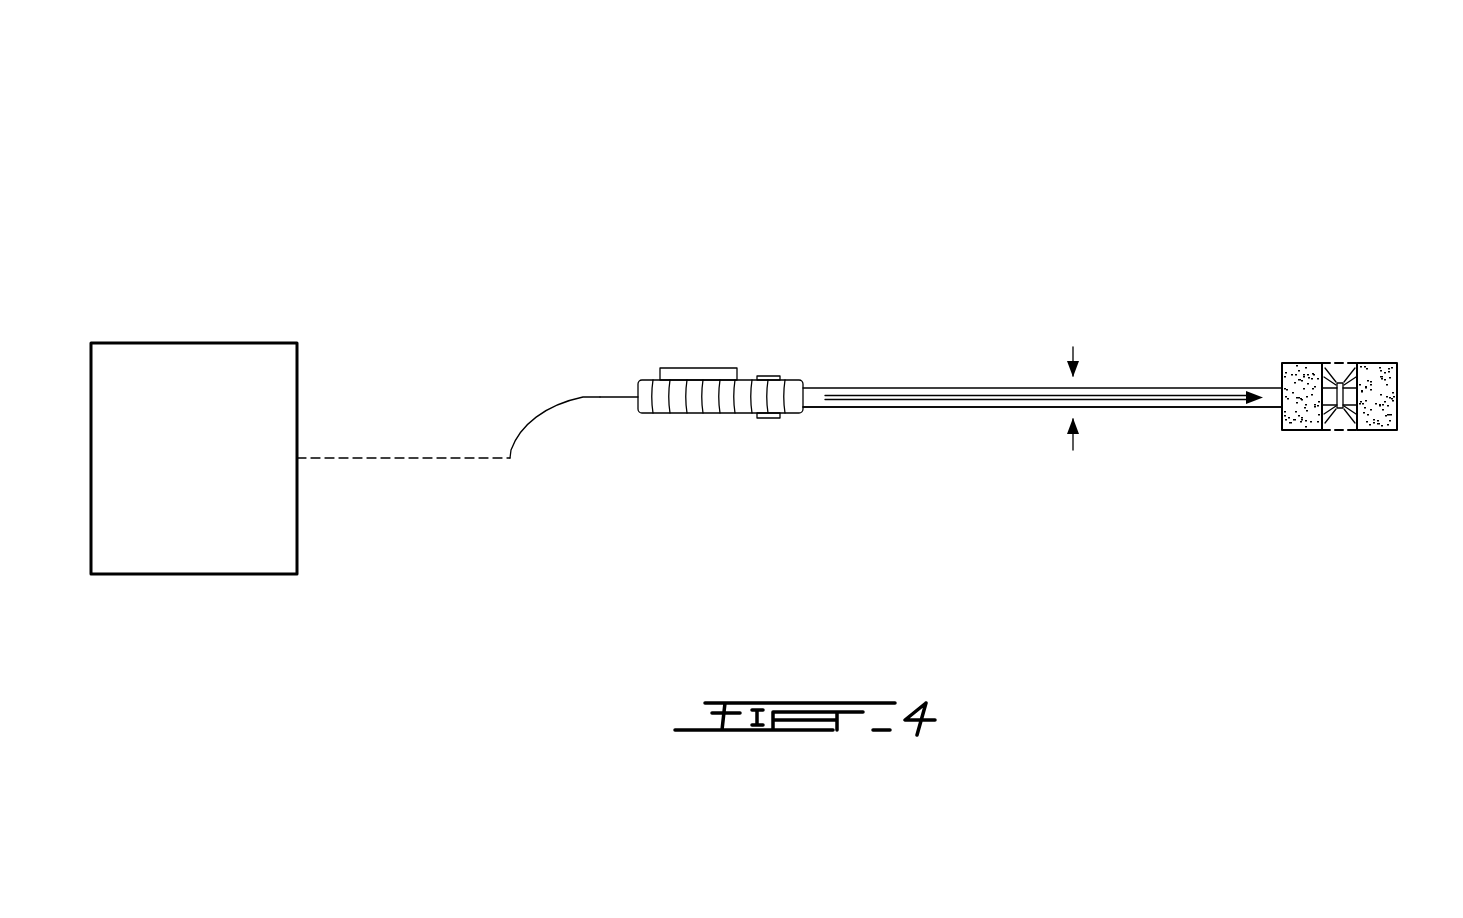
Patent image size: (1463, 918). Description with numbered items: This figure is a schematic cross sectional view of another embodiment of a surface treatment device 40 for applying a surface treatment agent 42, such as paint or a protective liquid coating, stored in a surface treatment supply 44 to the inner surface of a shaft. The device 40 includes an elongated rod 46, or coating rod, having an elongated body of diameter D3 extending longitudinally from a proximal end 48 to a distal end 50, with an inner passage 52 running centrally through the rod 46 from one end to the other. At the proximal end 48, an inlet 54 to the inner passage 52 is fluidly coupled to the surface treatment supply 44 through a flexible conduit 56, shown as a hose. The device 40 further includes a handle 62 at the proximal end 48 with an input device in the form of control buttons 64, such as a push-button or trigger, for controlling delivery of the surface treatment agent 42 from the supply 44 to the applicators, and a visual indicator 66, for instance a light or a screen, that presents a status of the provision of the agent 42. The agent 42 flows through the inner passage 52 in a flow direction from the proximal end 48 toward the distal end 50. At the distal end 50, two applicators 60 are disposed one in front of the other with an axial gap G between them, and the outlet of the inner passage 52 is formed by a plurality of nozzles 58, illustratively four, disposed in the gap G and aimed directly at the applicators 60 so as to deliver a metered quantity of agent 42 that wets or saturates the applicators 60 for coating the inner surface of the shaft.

The surface treatment device 40 is at (1145, 176).
The surface treatment agent 42 is at (857, 400).
The surface treatment supply 44 is at (193, 343).
The elongated rod 46 is at (975, 407).
The proximal end 48 is at (551, 364).
The distal end 50 is at (1391, 325).
The inner passage 52 is at (917, 388).
The inlet 54 is at (637, 396).
The flexible conduit 56 is at (440, 460).
The nozzles 58 is at (1327, 361).
The applicators 60 is at (1292, 410).
The handle 62 is at (673, 413).
The control buttons 64 is at (767, 376).
The visual indicator 66 is at (700, 368).
The diameter D3 is at (1074, 382).
The axial gap G is at (1337, 433).